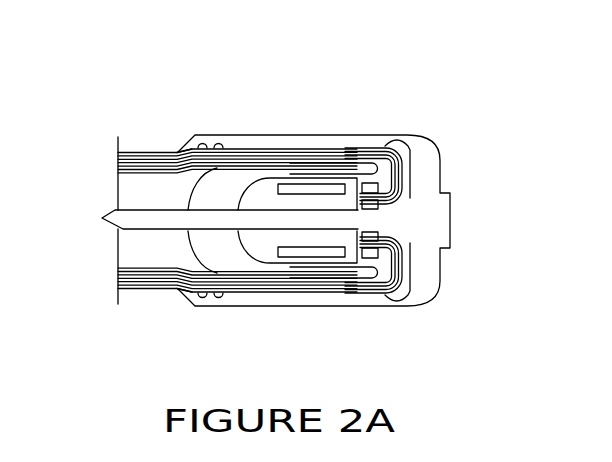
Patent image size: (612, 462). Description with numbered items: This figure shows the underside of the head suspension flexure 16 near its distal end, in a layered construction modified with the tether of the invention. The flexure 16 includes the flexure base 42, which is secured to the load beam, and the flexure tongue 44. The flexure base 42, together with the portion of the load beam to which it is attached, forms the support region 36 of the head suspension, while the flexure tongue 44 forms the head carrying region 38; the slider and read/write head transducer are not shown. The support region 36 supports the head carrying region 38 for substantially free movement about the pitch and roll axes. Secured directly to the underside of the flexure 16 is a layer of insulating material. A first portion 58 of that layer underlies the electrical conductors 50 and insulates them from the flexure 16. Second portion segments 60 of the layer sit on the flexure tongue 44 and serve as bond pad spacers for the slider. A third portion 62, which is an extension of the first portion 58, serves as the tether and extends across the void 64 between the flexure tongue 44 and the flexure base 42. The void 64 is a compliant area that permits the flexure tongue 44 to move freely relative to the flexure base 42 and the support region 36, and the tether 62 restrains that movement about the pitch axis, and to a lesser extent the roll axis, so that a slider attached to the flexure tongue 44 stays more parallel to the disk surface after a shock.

The flexure 16 is at (425, 175).
The support region 36 is at (174, 153).
The head carrying region 38 is at (246, 193).
The flexure base 42 is at (147, 190).
The flexure tongue 44 is at (268, 192).
The electrical conductors 50 is at (337, 153).
The first portion of the layer of insulating material 58 is at (313, 150).
The second portion segments of the layer of insulating material 60 is at (330, 187).
The third portion of the layer of insulating material (tether) 62 is at (218, 222).
The void 64 is at (201, 239).